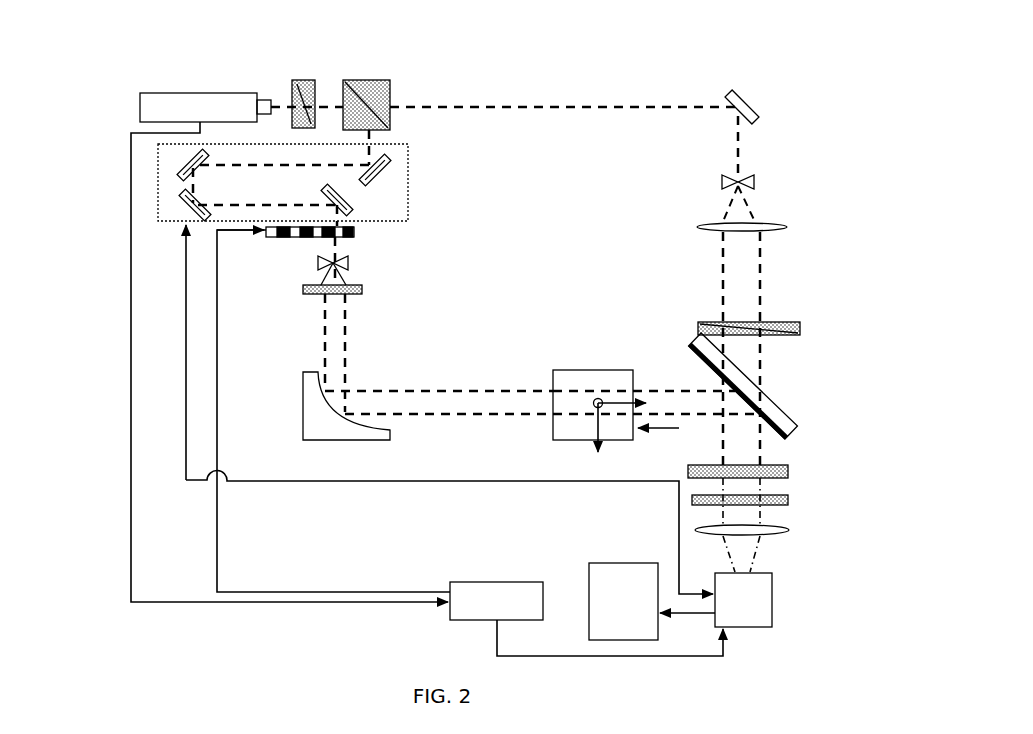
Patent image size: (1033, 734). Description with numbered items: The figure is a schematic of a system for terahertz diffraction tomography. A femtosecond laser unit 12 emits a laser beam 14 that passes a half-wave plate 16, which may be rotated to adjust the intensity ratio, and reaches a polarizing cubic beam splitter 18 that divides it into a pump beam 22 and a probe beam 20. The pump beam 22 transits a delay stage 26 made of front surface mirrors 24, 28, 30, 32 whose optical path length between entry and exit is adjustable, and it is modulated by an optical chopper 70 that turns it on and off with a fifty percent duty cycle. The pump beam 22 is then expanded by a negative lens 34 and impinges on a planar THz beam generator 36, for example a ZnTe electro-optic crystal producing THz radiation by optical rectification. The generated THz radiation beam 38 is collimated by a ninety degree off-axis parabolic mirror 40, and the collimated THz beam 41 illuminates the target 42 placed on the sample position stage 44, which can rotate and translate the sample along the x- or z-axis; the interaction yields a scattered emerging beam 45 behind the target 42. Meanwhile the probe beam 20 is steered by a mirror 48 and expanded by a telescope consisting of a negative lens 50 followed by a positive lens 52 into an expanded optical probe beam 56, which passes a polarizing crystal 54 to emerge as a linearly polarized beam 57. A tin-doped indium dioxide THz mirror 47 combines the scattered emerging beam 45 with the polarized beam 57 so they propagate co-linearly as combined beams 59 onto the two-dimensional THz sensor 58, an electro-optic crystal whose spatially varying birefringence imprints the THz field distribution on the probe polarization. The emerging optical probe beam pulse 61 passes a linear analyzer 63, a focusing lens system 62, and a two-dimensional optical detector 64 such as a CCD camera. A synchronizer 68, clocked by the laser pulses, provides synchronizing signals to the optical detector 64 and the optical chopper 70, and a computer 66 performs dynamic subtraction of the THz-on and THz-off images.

The femtosecond laser unit 12 is at (235, 100).
The laser beam 14 is at (330, 104).
The half-wave plate 16 is at (308, 86).
The polarizing cubic beam splitter 18 is at (384, 83).
The probe beam 20 is at (544, 104).
The pump beam 22 is at (253, 165).
The mirror 24 is at (392, 159).
The delay stage 26 is at (412, 179).
The mirror 28 is at (188, 162).
The mirror 30 is at (188, 209).
The mirror 32 is at (346, 201).
The negative lens 34 is at (346, 262).
The THz beam generator 36 is at (361, 288).
The THz radiation beam 38 is at (330, 337).
The parabolic mirror 40 is at (315, 417).
The collimated THz beam 41 is at (412, 390).
The target 42 is at (594, 406).
The sample position stage 44 is at (563, 375).
The scattered emerging beam 45 is at (666, 390).
The THz mirror 47 is at (777, 421).
The mirror 48 is at (746, 96).
The negative lens 50 is at (750, 178).
The positive lens 52 is at (786, 225).
The polarizing crystal 54 is at (790, 323).
The expanded optical probe beam 56 is at (750, 282).
The linearly polarized beam 57 is at (755, 355).
The two-dimensional THz sensor 58 is at (786, 473).
The combined beams 59 is at (755, 441).
The optical probe beam pulse 61 is at (742, 491).
The focusing lens system 62 is at (775, 533).
The linear analyzer 63 is at (788, 500).
The two-dimensional optical detector 64 is at (743, 600).
The computer 66 is at (652, 601).
The synchronizer 68 is at (496, 601).
The optical chopper 70 is at (286, 234).